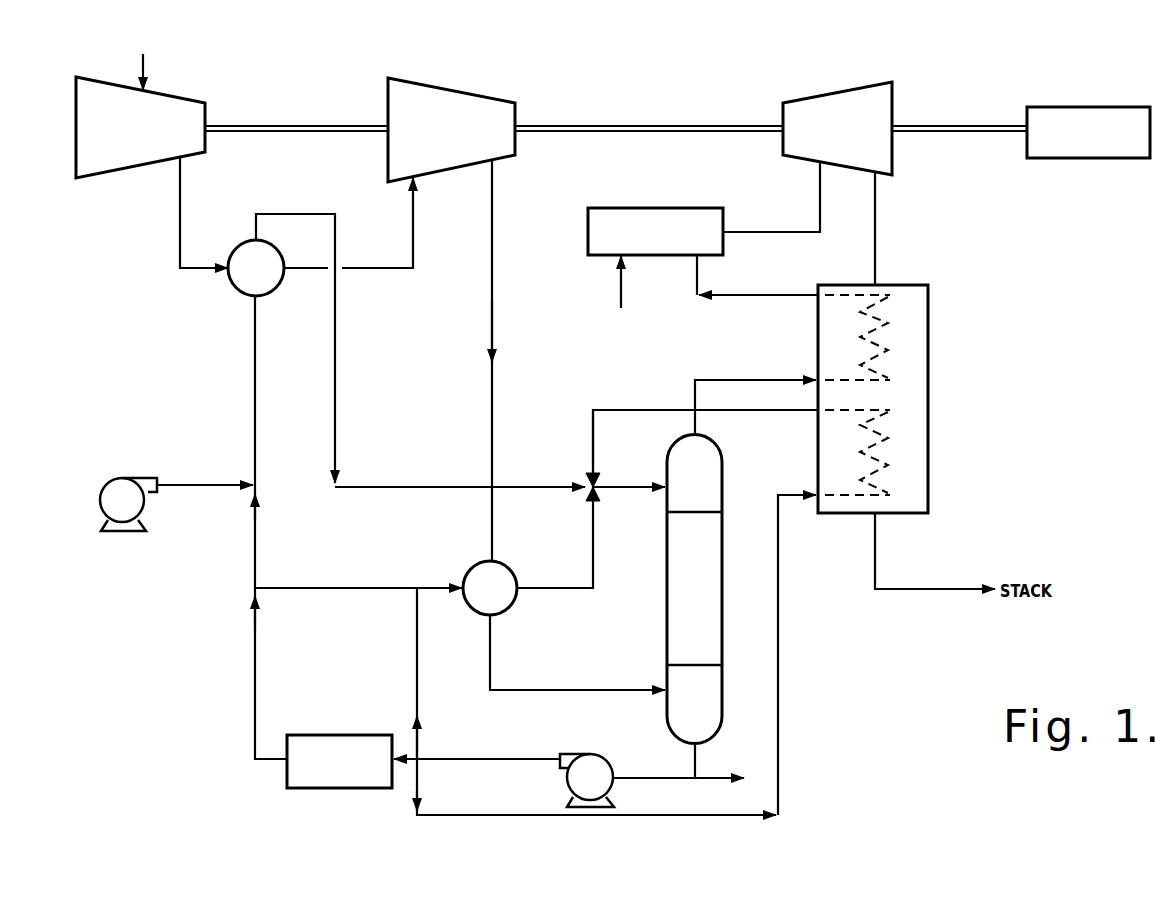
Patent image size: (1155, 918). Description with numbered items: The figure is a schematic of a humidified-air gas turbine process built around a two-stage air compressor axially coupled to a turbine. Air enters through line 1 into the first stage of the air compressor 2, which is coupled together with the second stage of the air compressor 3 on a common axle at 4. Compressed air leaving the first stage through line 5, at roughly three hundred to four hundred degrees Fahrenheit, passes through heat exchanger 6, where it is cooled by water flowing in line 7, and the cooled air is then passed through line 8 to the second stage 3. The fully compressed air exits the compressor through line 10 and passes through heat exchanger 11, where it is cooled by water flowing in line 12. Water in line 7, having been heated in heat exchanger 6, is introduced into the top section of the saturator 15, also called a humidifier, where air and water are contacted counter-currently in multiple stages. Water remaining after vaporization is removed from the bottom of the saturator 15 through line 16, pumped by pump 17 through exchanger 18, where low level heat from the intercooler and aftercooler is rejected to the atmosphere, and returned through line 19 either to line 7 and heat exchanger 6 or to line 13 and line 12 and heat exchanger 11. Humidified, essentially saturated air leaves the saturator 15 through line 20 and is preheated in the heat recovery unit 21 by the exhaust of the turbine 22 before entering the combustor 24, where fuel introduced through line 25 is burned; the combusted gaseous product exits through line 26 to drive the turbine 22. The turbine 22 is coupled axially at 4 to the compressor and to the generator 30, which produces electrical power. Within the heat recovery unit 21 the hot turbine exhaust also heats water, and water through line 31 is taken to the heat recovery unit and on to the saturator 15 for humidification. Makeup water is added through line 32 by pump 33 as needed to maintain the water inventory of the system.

The line 1 is at (145, 67).
The first stage of the air compressor 2 is at (76, 103).
The second stage of the air compressor 3 is at (453, 88).
The axial coupling 4 is at (258, 125).
The line 5 is at (180, 185).
The heat exchanger 6 is at (246, 243).
The line 7 is at (255, 385).
The line 8 is at (413, 226).
The line 10 is at (492, 238).
The heat exchanger 11 is at (505, 566).
The line 12 is at (452, 584).
The line 13 is at (318, 588).
The saturator 15 is at (694, 589).
The line 16 is at (695, 758).
The pump 17 is at (583, 752).
The exchanger 18 is at (357, 735).
The line 19 is at (255, 690).
The line 20 is at (733, 380).
The heat recovery unit 21 is at (928, 335).
The turbine 22 is at (838, 90).
The combustor 24 is at (660, 208).
The line 25 is at (621, 287).
The line 26 is at (781, 232).
The generator 30 is at (1105, 107).
The line 31 is at (778, 665).
The line 32 is at (228, 485).
The pump 33 is at (150, 512).